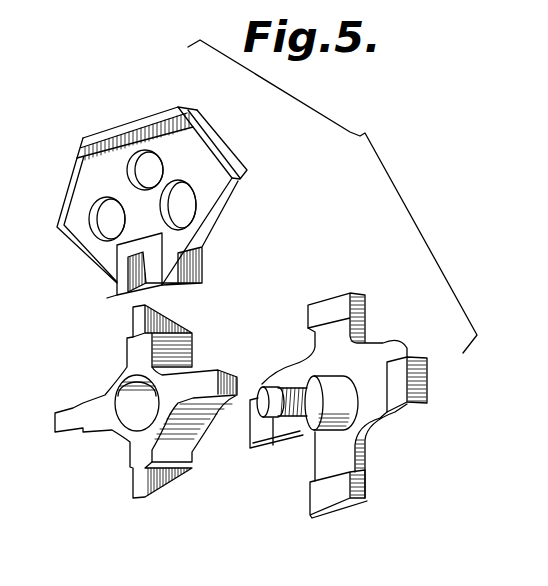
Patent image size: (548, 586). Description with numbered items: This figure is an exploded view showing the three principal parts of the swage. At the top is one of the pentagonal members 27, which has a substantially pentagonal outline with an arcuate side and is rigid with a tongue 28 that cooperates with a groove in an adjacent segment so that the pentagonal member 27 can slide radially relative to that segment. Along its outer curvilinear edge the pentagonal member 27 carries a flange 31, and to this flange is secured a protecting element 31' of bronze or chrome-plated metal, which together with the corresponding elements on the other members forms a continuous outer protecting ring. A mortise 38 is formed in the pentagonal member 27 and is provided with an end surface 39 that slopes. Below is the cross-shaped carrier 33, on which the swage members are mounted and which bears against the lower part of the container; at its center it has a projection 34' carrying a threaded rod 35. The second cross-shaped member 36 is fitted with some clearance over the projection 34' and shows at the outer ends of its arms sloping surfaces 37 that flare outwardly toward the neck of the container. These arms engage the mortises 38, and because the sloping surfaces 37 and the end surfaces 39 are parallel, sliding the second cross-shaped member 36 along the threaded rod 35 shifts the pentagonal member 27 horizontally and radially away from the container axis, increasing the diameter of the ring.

The pentagonal member 27 is at (197, 153).
The tongue 28 is at (233, 165).
The flange 31 is at (133, 108).
The protecting element 31' is at (126, 102).
The cross-shaped carrier 33 is at (386, 342).
The projection 34' is at (297, 442).
The threaded rod 35 is at (262, 395).
The second cross-shaped member 36 is at (135, 456).
The sloping surface 37 is at (165, 320).
The mortise 38 is at (137, 282).
The end surface 39 is at (147, 264).